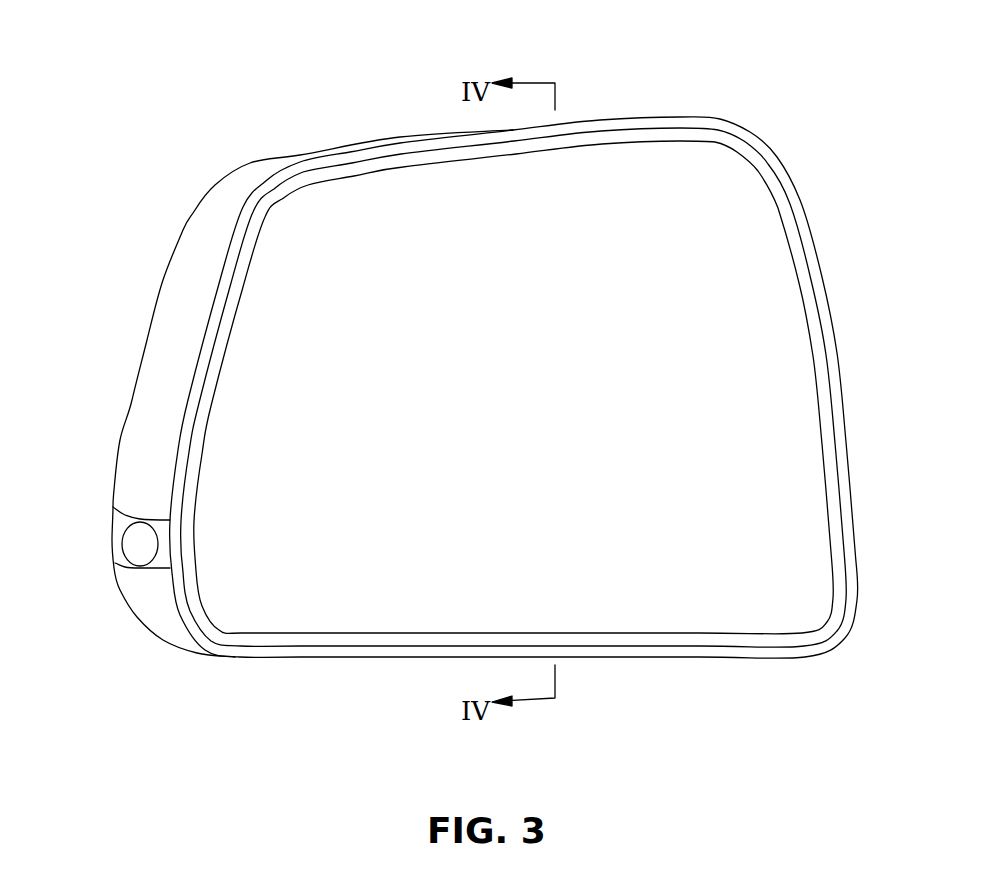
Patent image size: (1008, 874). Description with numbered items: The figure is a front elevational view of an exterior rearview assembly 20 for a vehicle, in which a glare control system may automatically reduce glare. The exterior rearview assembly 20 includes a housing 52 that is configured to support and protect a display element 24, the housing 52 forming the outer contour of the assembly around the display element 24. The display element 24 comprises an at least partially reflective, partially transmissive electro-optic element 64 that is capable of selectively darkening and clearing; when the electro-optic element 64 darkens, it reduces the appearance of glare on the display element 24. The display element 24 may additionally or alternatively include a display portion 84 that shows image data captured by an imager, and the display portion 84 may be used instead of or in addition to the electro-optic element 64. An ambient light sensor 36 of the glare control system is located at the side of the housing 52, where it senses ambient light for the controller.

The exterior rearview assembly 20 is at (461, 345).
The display element 24 is at (683, 190).
The ambient light sensor 36 is at (113, 518).
The housing 52 is at (170, 342).
The electro-optic element 64 is at (715, 287).
The display portion 84 is at (577, 413).